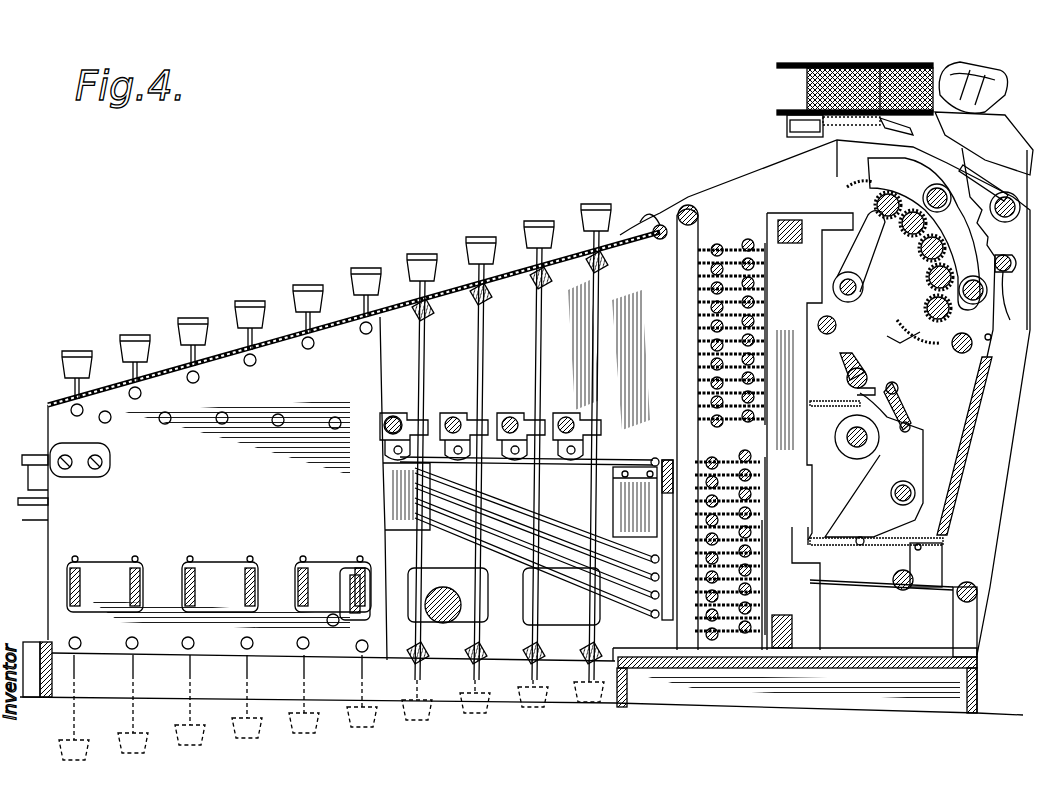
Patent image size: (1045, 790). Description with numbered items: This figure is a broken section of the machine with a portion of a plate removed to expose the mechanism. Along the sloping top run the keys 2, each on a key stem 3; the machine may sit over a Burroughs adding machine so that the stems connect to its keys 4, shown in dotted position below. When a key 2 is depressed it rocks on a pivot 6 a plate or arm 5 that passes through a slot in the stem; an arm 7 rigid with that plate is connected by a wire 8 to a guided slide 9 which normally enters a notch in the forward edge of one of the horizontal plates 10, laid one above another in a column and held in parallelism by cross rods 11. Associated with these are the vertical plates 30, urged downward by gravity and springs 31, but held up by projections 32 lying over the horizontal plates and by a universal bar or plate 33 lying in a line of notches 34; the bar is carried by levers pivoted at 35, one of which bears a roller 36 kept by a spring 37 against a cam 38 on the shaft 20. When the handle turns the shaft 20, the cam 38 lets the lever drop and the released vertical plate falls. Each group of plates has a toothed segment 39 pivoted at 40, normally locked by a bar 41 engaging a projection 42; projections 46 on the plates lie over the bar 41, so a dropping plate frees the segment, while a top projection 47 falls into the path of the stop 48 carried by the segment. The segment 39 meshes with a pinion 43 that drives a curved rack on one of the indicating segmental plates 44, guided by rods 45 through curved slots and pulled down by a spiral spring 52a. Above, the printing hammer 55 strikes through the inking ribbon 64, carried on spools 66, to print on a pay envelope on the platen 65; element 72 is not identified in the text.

The key 2 is at (421, 257).
The key stem 3 is at (426, 356).
The adding machine key 4 is at (430, 713).
The plate or arm 5 is at (412, 413).
The pivot 6 is at (385, 425).
The arm 7 is at (382, 462).
The wire 8 is at (430, 437).
The guided slide 9 is at (665, 617).
The horizontal plate 10 is at (727, 617).
The cross rod 11 is at (745, 630).
The shaft 20 is at (853, 447).
The vertical plate 30 is at (807, 431).
The spring 31 is at (883, 580).
The projection 32 is at (765, 268).
The universal bar or plate 33 is at (847, 547).
The notch 34 is at (874, 465).
The pivot 35 is at (915, 493).
The roller 36 is at (897, 390).
The spring 37 is at (908, 425).
The cam 38 is at (845, 410).
The toothed segment 39 is at (900, 343).
The pivot 40 is at (840, 287).
The bar 41 is at (848, 375).
The projection 42 is at (845, 358).
The pinion 43 is at (876, 200).
The segmental plate 44 is at (993, 293).
The guiding rod 45 is at (975, 195).
The projection 46 is at (815, 345).
The projection 47 is at (840, 220).
The stop 48 is at (868, 258).
The spiral spring 52a is at (975, 425).
The printing hammer 55 is at (963, 150).
The inking ribbon 64 is at (933, 70).
The platen 65 is at (970, 163).
The spool 66 is at (790, 63).
The stud 72 is at (1007, 278).